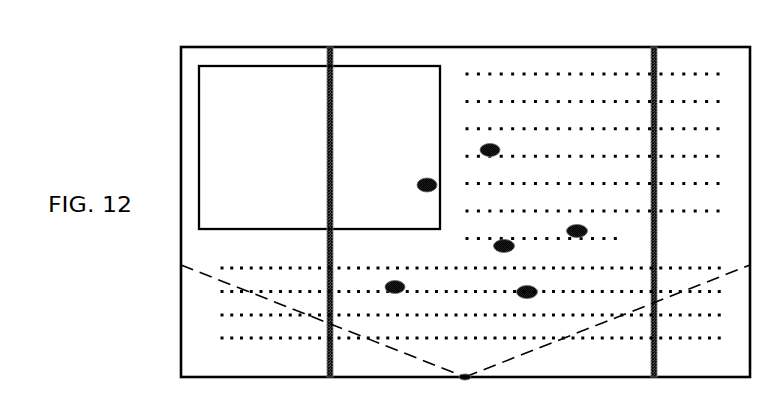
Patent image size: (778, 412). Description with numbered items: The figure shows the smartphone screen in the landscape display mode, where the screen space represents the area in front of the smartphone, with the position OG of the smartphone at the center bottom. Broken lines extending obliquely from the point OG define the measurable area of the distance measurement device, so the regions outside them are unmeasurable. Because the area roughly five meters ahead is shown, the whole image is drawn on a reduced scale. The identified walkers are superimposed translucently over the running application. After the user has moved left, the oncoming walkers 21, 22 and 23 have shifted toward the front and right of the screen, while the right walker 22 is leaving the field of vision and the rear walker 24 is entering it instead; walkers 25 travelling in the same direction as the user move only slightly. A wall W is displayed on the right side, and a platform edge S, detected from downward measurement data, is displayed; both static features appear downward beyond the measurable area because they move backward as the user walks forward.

The walker 21 is at (518, 296).
The walker 22 is at (582, 228).
The walker 23 is at (512, 240).
The rear walker 24 is at (497, 146).
The walkers 25 is at (421, 180).
The platform edge S is at (328, 145).
The wall W is at (655, 255).
The position of the smartphone OG is at (465, 379).